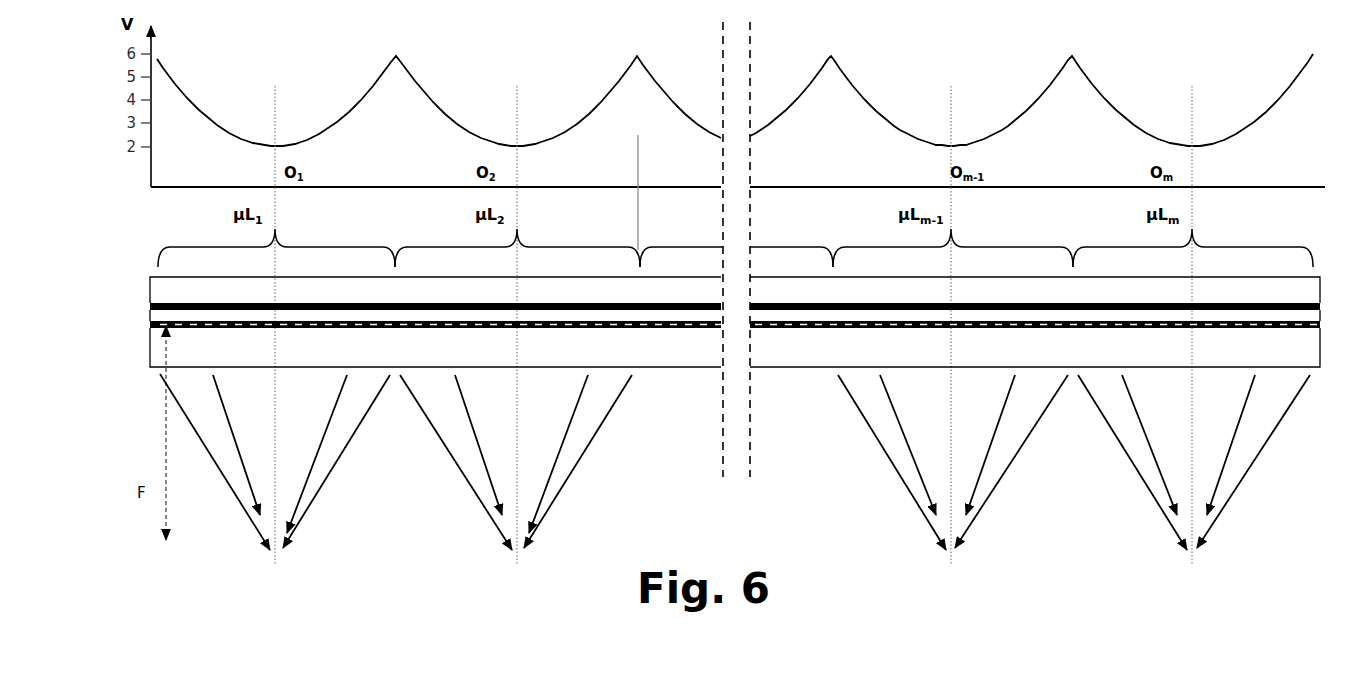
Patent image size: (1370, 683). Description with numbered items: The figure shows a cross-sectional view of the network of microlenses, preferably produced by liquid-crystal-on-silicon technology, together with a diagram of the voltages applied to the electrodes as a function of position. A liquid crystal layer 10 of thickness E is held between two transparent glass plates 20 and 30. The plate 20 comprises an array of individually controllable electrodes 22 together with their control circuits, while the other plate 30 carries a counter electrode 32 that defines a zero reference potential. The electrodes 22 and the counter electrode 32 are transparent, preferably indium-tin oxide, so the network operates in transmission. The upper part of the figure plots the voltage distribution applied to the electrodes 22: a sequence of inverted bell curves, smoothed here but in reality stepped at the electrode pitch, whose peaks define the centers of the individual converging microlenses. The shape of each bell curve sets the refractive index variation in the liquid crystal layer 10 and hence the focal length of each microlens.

The liquid crystal layer 10 is at (140, 316).
The transparent plate 20 is at (148, 352).
The individually controllable electrodes 22 is at (140, 325).
The transparent plate 30 is at (150, 290).
The counter electrode 32 is at (140, 307).